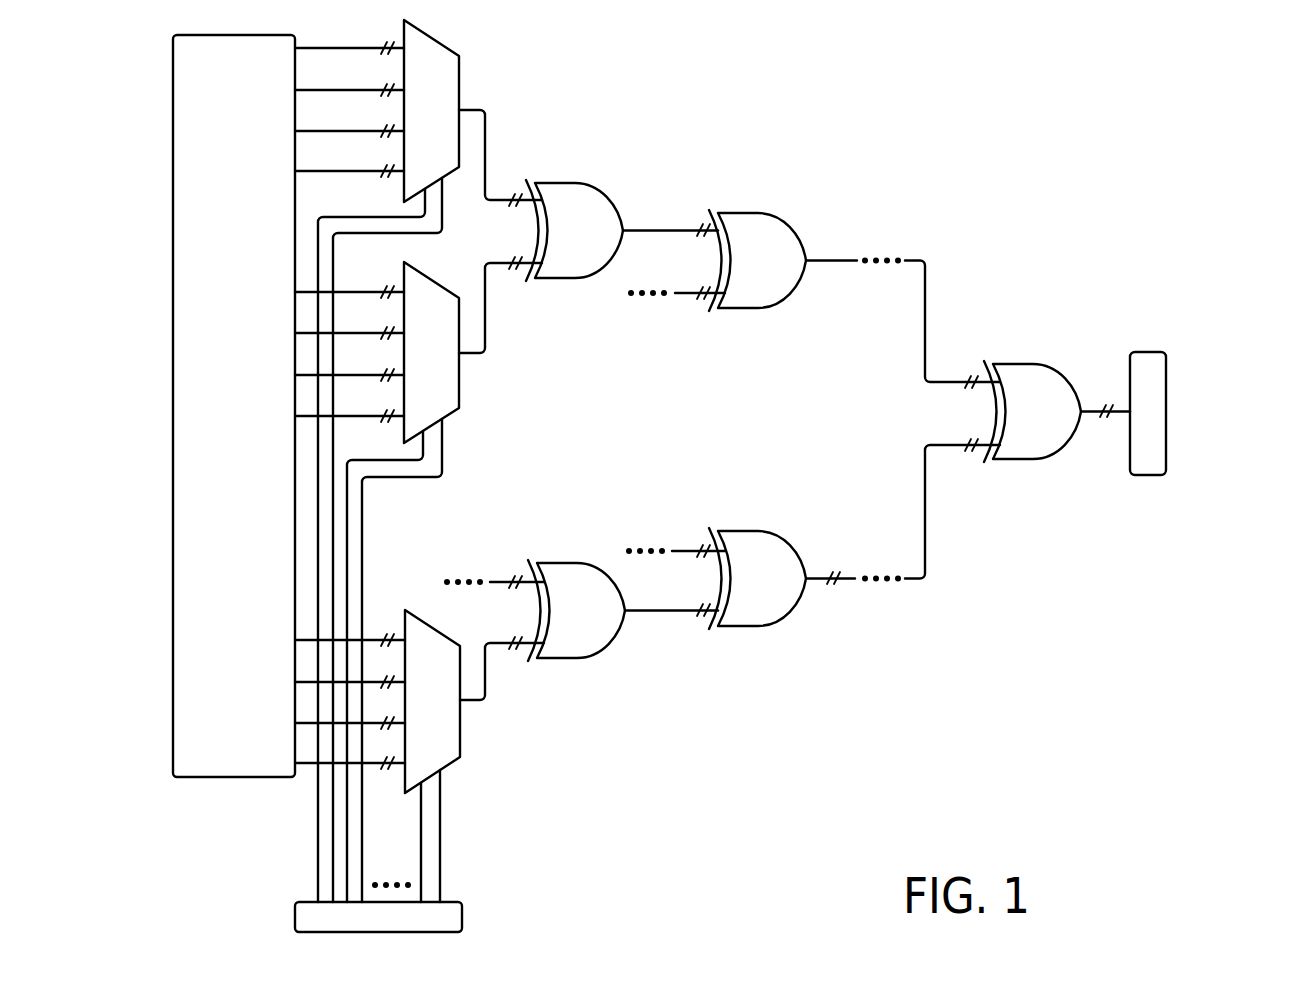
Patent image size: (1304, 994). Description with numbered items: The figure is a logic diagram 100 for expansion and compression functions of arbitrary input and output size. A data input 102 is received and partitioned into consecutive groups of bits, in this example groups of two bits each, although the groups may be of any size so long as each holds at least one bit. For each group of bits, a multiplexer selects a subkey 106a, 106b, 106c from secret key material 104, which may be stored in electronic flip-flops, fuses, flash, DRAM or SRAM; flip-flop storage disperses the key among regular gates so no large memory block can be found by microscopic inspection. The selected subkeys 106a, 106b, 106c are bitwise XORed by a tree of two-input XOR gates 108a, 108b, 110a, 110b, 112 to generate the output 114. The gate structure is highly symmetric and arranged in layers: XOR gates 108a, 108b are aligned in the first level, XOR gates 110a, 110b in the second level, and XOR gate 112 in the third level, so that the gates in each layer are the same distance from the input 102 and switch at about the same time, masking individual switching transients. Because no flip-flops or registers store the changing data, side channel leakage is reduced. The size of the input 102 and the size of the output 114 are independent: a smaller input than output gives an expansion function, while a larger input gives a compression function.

The logic diagram for expansion and compression functions 100 is at (1152, 147).
The data input 102 is at (455, 916).
The secret key material 104 is at (212, 464).
The subkey 106a is at (450, 82).
The subkey 106b is at (452, 386).
The subkey 106c is at (452, 736).
The XOR gate 108a is at (560, 241).
The XOR gate 108b is at (560, 618).
The XOR gate 110a is at (795, 272).
The XOR gate 110b is at (744, 592).
The XOR gate 112 is at (1022, 424).
The output 114 is at (1167, 388).